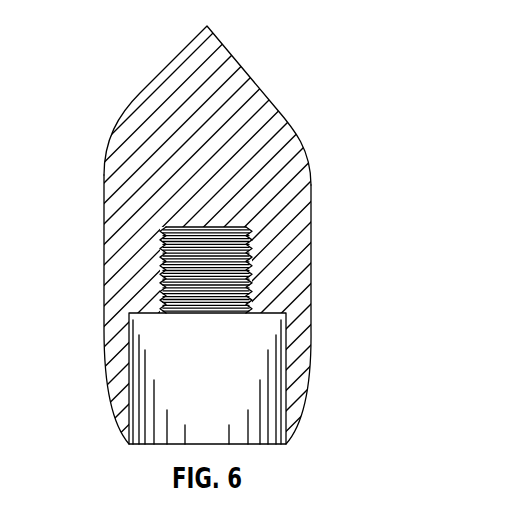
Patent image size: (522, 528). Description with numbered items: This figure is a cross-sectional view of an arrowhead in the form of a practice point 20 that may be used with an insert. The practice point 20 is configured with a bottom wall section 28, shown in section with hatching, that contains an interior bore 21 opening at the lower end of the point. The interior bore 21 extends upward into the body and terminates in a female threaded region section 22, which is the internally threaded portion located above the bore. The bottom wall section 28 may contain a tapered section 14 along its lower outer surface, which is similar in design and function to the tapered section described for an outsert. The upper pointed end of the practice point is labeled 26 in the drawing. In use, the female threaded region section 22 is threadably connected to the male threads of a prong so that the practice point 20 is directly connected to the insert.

The tapered section 14 is at (112, 390).
The practice point 20 is at (299, 81).
The interior bore 21 is at (263, 387).
The female threaded region section 22 is at (252, 256).
The tip 26 is at (151, 91).
The bottom wall section 28 is at (311, 258).